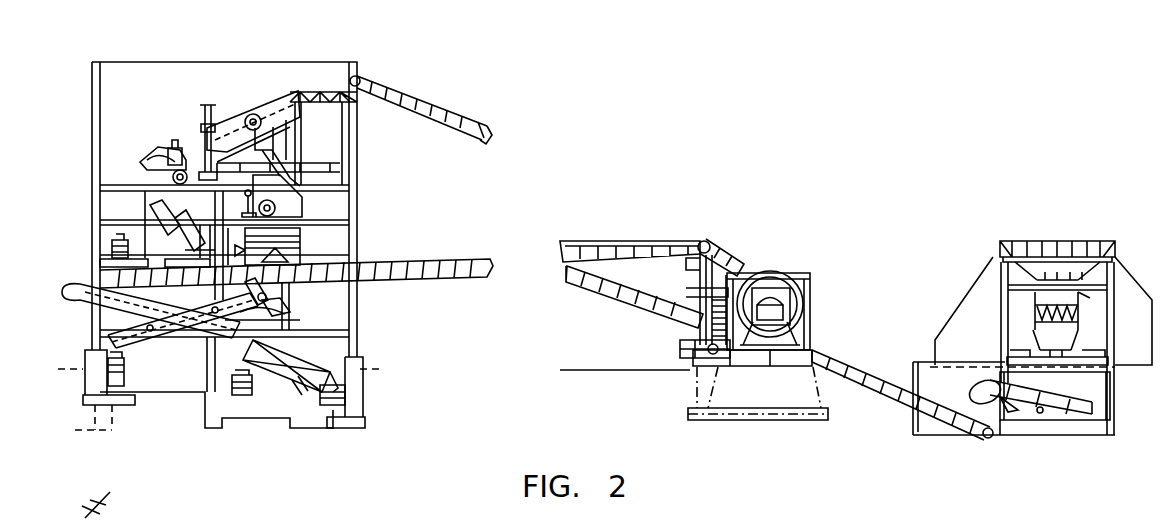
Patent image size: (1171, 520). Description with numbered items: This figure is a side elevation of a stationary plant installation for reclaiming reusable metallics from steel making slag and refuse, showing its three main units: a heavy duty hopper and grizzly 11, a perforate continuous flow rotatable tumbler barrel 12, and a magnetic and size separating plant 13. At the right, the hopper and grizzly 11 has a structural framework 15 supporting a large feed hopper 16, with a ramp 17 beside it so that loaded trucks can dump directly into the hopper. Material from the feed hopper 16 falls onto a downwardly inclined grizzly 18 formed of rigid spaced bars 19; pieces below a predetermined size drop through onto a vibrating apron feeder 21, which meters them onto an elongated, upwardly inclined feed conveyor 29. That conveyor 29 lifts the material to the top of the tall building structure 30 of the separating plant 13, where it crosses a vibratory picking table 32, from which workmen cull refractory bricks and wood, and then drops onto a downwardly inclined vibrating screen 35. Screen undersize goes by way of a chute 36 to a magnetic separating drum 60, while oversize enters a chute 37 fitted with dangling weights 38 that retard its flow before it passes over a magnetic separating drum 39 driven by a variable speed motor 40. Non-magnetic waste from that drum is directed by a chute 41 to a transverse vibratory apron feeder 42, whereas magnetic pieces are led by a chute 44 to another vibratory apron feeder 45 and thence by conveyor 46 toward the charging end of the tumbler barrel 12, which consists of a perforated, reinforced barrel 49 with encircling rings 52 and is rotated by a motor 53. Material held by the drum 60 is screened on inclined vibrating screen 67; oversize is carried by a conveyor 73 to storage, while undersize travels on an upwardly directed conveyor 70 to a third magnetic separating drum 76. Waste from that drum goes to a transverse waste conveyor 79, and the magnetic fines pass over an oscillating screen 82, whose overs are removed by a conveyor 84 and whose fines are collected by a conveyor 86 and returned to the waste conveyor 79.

The hopper and grizzly 11 is at (1030, 190).
The perforate continuous flow rotatable tumbler barrel 12 is at (793, 259).
The magnetic and size separating plant 13 is at (371, 53).
The structural framework 15 is at (1112, 277).
The feed hopper 16 is at (1060, 247).
The ramp 17 is at (968, 296).
The grizzly 18 is at (1037, 315).
The spaced bars 19 is at (1078, 310).
The apron feeder 21 is at (986, 372).
The feed conveyor 29 is at (452, 116).
The building structure 30 is at (296, 63).
The picking table 32 is at (322, 86).
The vibrating screen 35 is at (233, 120).
The chute 36 is at (284, 170).
The chute 37 is at (142, 160).
The dangling weights 38 is at (180, 158).
The magnetic separating drum 39 is at (170, 176).
The variable speed motor 40 is at (207, 122).
The chute 41 is at (145, 220).
The vibratory apron feeder 42 is at (135, 245).
The chute 44 is at (197, 218).
The vibratory apron feeder 45 is at (100, 263).
The conveyor 46 is at (437, 262).
The barrel 49 is at (793, 318).
The encircling rings 52 is at (790, 285).
The motor 53 is at (700, 345).
The magnetic separating drum 60 is at (285, 208).
The vibrating screen 67 is at (108, 318).
The conveyor 70 is at (187, 335).
The conveyor 73 is at (120, 370).
The magnetic separating drum 76 is at (288, 304).
The waste conveyor 79 is at (250, 386).
The oscillating screen 82 is at (312, 366).
The conveyor 84 is at (331, 400).
The conveyor 86 is at (298, 382).